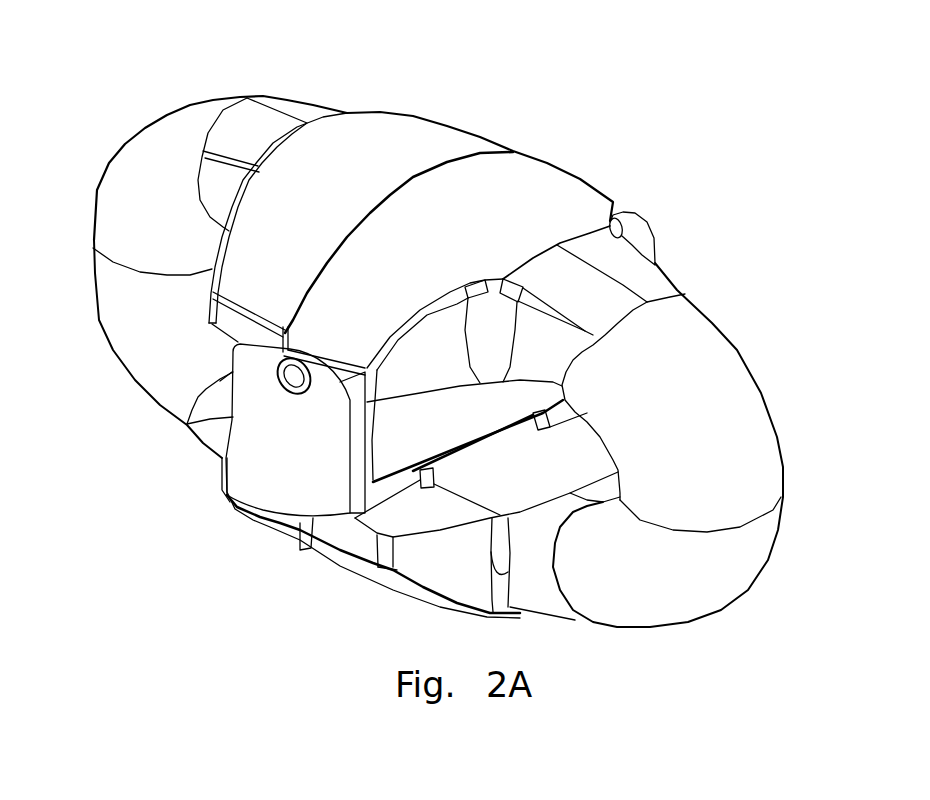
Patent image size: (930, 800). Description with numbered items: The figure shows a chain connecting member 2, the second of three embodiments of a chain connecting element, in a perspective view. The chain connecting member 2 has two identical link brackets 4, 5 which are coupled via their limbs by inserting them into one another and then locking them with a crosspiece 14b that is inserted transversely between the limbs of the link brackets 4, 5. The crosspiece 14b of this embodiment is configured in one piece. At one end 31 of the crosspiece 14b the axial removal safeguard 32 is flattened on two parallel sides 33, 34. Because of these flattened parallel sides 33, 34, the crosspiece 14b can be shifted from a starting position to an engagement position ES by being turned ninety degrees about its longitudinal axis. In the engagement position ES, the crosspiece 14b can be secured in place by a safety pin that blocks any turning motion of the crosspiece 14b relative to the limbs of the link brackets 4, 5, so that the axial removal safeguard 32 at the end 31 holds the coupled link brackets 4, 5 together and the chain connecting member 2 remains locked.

The chain connecting member 2 is at (625, 152).
The link bracket 4 is at (742, 341).
The link bracket 5 is at (98, 322).
The crosspiece 14b is at (371, 538).
The end of the crosspiece 31 is at (257, 430).
The axial removal safeguard 32 is at (315, 518).
The parallel side 33 is at (185, 412).
The parallel side 34 is at (372, 420).
The engagement position ES is at (61, 485).